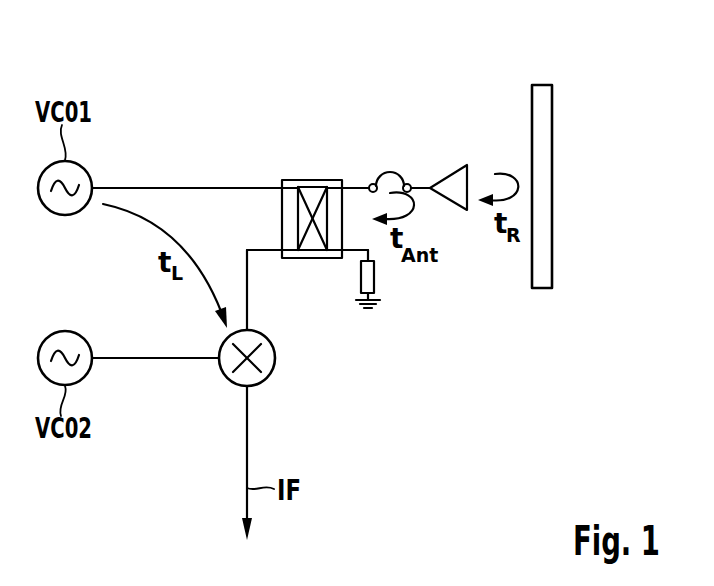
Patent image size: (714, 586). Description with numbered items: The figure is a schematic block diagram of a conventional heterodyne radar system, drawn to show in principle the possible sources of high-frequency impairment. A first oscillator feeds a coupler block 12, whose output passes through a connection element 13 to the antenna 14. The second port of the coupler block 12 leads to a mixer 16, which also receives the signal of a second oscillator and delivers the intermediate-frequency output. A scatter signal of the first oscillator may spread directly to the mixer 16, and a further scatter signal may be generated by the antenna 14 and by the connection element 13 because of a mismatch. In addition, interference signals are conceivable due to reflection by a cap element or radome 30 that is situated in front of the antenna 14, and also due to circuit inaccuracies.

The directional coupler / circulator 12 is at (311, 180).
The connection element 13 is at (389, 172).
The antenna 14 is at (450, 165).
The mixer 16 is at (275, 358).
The radome 30 is at (539, 85).